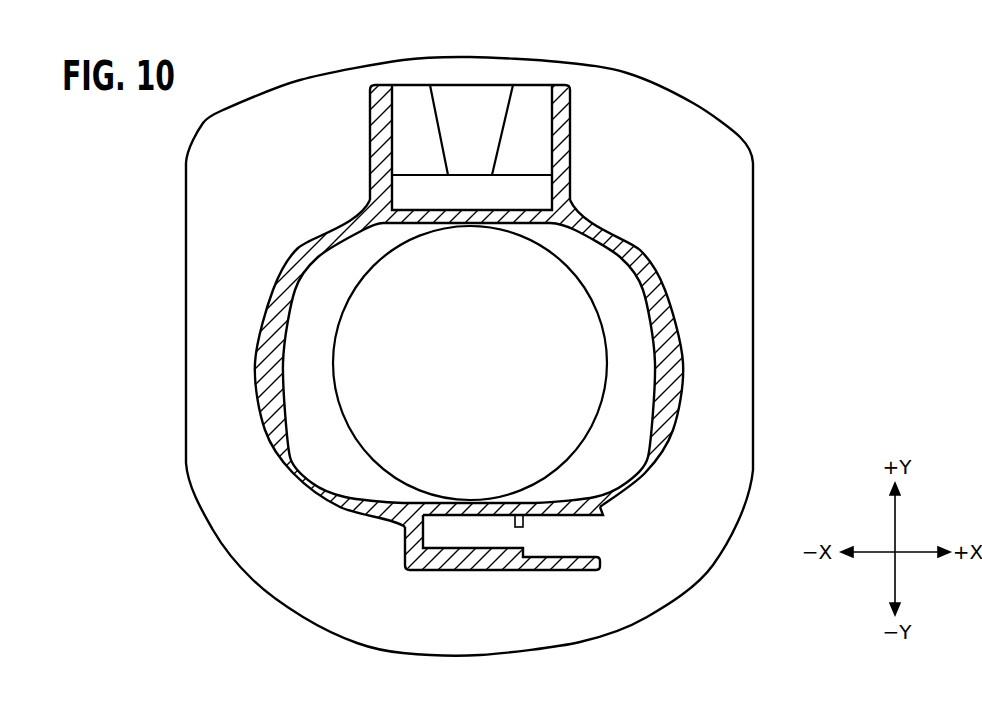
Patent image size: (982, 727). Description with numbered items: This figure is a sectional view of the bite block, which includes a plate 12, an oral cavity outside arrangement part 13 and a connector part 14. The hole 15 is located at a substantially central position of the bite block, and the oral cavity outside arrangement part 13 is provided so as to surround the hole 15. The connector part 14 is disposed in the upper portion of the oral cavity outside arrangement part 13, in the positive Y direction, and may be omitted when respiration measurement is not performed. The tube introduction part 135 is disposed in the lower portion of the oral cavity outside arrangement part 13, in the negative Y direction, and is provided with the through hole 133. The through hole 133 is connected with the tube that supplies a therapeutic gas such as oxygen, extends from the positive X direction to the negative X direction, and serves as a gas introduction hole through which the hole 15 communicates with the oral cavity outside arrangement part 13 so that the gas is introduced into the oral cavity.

The plate 12 is at (710, 245).
The oral cavity outside arrangement part 13 is at (637, 452).
The connector part 14 is at (362, 84).
The hole 15 is at (383, 420).
The through hole 133 is at (590, 527).
The tube introduction part 135 is at (395, 563).